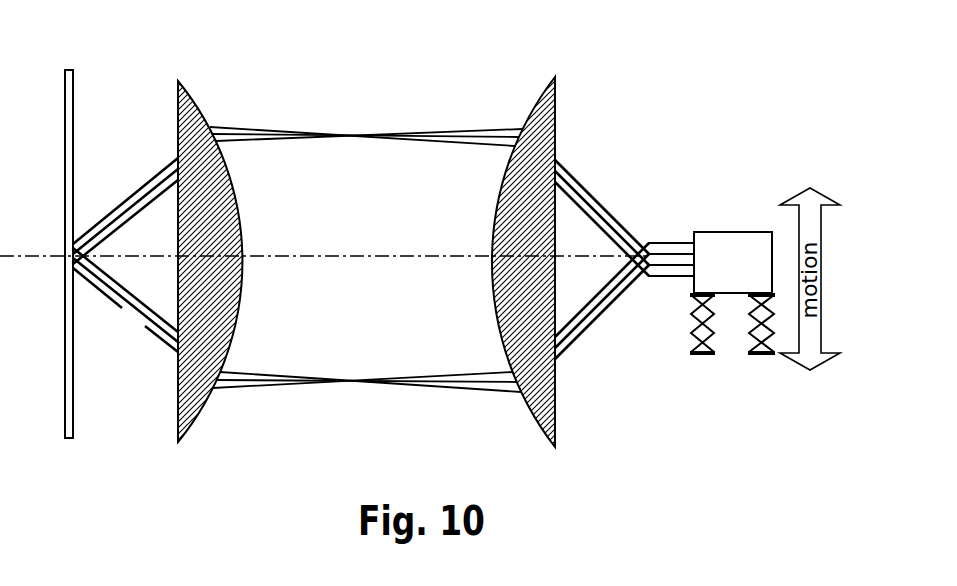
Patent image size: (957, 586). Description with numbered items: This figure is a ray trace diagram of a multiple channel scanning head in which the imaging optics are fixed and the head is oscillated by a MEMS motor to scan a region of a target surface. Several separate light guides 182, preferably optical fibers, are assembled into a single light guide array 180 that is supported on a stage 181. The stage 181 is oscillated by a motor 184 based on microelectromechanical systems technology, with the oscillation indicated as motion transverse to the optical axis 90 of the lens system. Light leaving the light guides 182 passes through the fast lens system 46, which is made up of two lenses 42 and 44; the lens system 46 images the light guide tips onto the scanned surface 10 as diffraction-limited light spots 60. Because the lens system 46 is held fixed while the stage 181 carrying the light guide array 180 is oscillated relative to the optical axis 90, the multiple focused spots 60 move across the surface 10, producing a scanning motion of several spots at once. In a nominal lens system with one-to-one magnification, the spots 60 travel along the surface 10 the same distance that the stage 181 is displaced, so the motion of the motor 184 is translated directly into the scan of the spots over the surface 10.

The scanned surface 10 is at (73, 127).
The lens 42 is at (224, 254).
The lens 44 is at (536, 259).
The lens system 46 is at (367, 344).
The light spot 60 is at (73, 273).
The optical axis 90 is at (254, 256).
The light guide array 180 is at (723, 268).
The stage 181 is at (752, 276).
The light guides 182 is at (667, 282).
The motor 184 is at (745, 321).